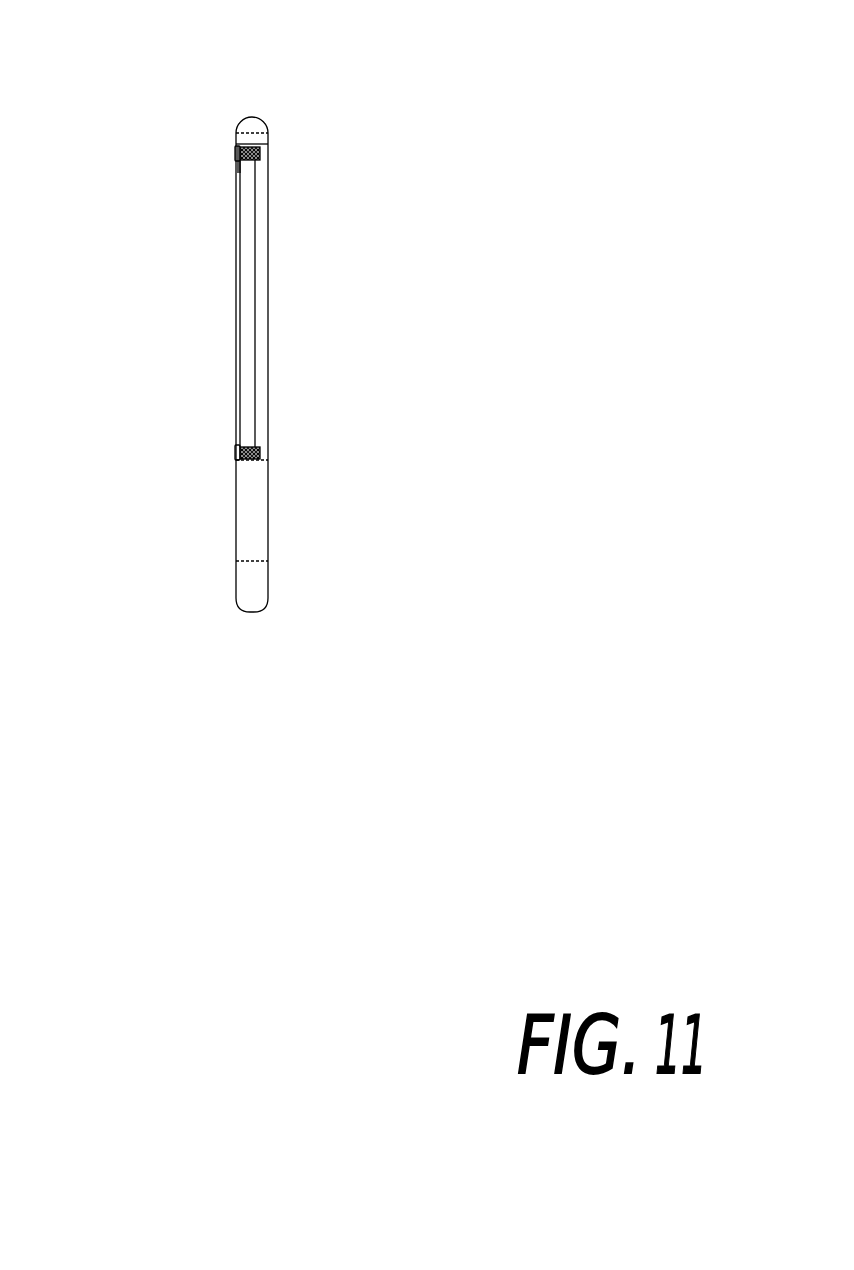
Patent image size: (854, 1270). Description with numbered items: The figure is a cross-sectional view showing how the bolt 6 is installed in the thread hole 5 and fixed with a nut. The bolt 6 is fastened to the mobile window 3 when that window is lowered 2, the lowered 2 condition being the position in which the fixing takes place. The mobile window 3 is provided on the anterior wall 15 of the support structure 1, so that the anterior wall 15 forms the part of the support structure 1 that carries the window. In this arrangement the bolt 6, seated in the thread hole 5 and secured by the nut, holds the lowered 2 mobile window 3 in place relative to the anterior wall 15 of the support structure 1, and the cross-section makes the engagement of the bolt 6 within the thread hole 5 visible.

The support structure 1 is at (268, 120).
The lowered 2 is at (238, 432).
The mobile window 3 is at (240, 262).
The thread hole 5 is at (260, 458).
The bolt 6 is at (236, 152).
The anterior wall 15 is at (232, 407).